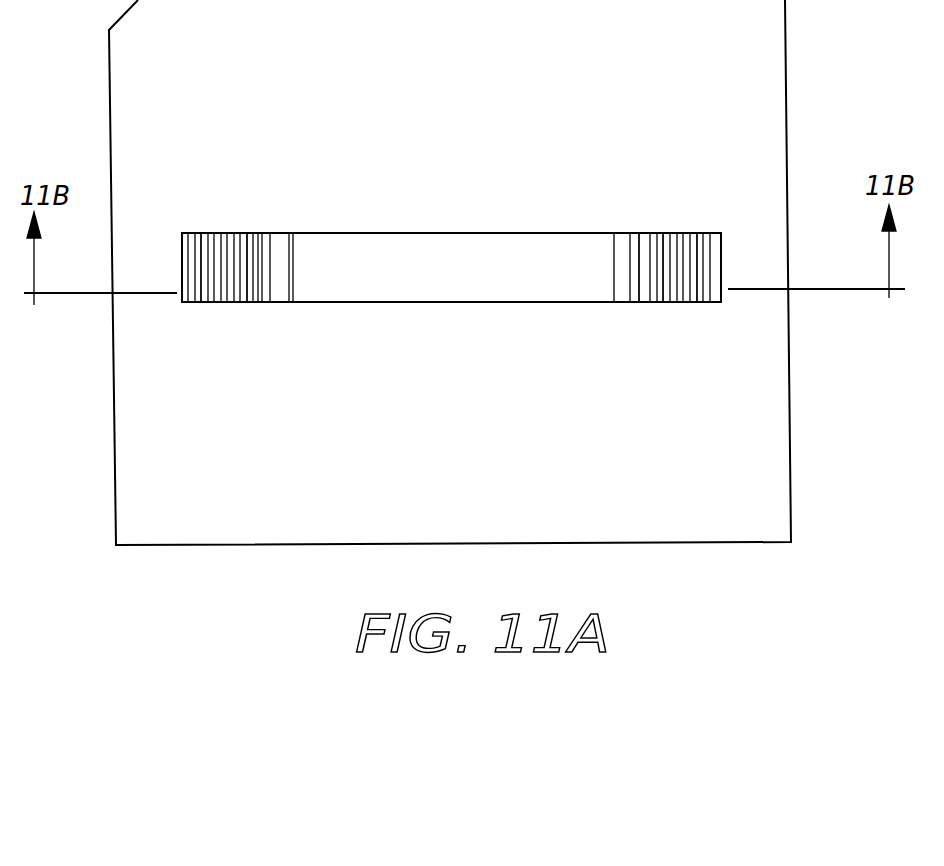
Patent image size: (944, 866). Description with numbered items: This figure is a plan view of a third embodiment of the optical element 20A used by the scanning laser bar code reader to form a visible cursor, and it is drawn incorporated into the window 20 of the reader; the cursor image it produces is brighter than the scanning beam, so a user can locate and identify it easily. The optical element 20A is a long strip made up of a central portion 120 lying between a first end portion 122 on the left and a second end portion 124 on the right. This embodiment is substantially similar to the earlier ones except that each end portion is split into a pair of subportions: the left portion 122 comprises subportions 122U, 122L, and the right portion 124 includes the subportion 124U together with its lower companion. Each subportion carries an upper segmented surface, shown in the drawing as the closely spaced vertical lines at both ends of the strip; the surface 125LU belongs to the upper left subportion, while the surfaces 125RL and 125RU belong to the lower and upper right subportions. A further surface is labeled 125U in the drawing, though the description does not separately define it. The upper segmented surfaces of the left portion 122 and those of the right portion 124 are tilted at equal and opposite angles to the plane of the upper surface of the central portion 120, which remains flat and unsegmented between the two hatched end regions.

The window 20 is at (110, 96).
The optical element 20A is at (283, 233).
The central portion 120 is at (446, 233).
The first end portion 122 is at (243, 233).
The subportion 122L is at (199, 233).
The subportion 122U is at (258, 302).
The second end portion 124 is at (640, 233).
The subportion 124U is at (667, 233).
The left upper groove 125U is at (204, 272).
The upper segmented surface 125LU is at (252, 272).
The upper segmented surface 125RL is at (645, 274).
The upper segmented surface 125RU is at (700, 275).